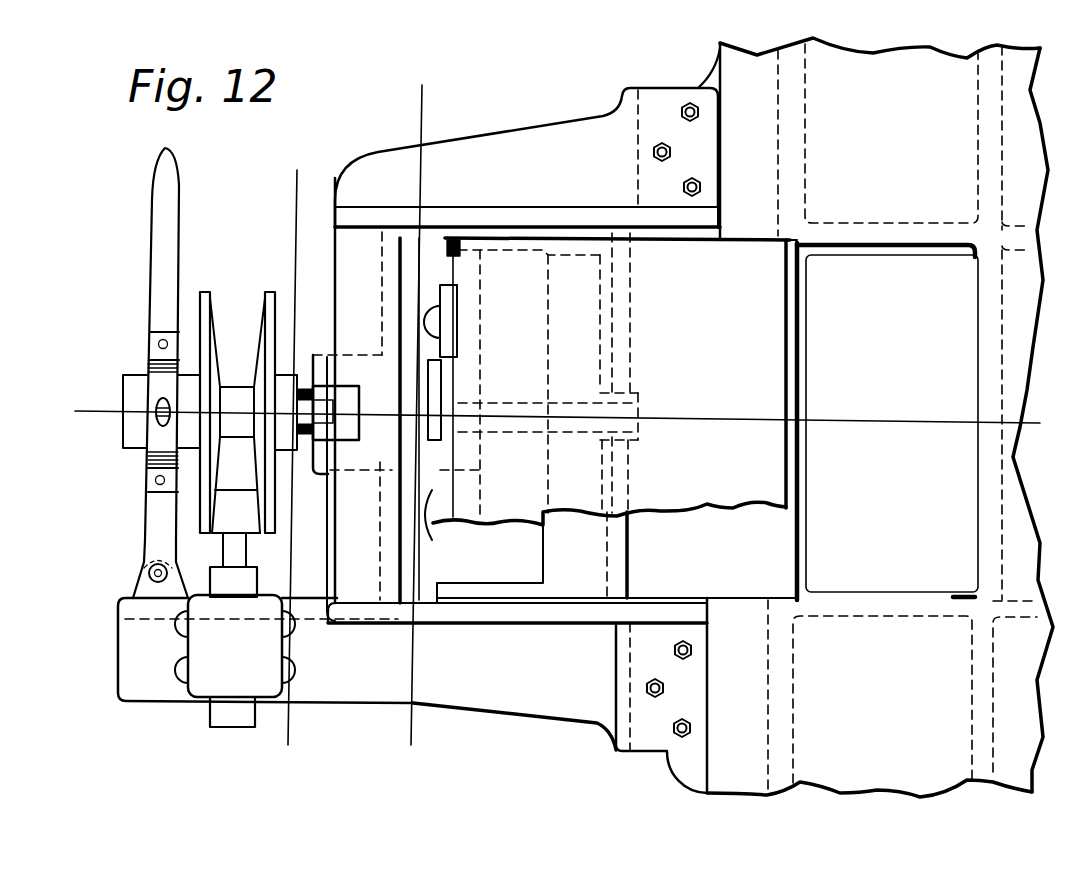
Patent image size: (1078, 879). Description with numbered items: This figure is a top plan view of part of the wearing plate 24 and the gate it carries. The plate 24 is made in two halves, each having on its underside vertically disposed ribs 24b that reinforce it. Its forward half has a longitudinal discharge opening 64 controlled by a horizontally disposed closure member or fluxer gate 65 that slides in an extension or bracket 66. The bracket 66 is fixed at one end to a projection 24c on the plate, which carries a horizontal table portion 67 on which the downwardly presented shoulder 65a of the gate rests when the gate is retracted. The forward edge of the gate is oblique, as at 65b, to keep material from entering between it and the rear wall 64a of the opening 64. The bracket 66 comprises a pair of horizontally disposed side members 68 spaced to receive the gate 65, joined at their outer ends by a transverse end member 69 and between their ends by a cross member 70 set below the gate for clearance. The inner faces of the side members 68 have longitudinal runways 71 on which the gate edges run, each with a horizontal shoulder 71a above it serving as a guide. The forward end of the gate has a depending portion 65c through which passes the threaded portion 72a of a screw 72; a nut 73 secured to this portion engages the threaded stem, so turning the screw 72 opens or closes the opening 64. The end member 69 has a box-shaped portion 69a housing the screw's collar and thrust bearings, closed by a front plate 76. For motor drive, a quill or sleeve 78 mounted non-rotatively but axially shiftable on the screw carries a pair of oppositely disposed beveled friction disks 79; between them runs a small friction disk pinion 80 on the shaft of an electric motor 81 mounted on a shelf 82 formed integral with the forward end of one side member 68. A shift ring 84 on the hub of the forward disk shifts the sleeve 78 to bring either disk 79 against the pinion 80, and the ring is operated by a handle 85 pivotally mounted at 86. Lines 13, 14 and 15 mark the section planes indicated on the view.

The section line 13- 13 is at (549, 423).
The section line 14- 14 is at (289, 461).
The section line 15- 15 is at (407, 420).
The wearing plate 24 is at (880, 417).
The vertically disposed ribs 24b is at (985, 172).
The projection 24c is at (700, 86).
The longitudinally disposed opening 64 is at (887, 421).
The rear wall 64a is at (976, 541).
The closure member 65 is at (604, 416).
The downwardly presented shoulder 65a is at (762, 470).
The oblique forward edge 65b is at (788, 476).
The depending portion 65c is at (472, 458).
The extension 66 is at (470, 136).
The table portion 67 is at (671, 555).
The side members 68 is at (512, 220).
The transverse member 69 is at (352, 252).
The box-shaped portion 69a is at (360, 466).
The cross member 70 is at (570, 541).
The runways 71 is at (452, 256).
The horizontally disposed shoulder 71a is at (657, 240).
The screw 72 is at (306, 398).
The threaded portion 72a is at (524, 416).
The nut 73 is at (439, 465).
The front plate 76 is at (320, 476).
The sleeve 78 is at (234, 390).
The beveled friction disks 79 is at (268, 312).
The friction disk pinion 80 is at (235, 494).
The electric motor 81 is at (235, 647).
The shelf 82 is at (155, 686).
The shift ring 84 is at (148, 465).
The handle 85 is at (150, 280).
The pivot 86 is at (149, 574).